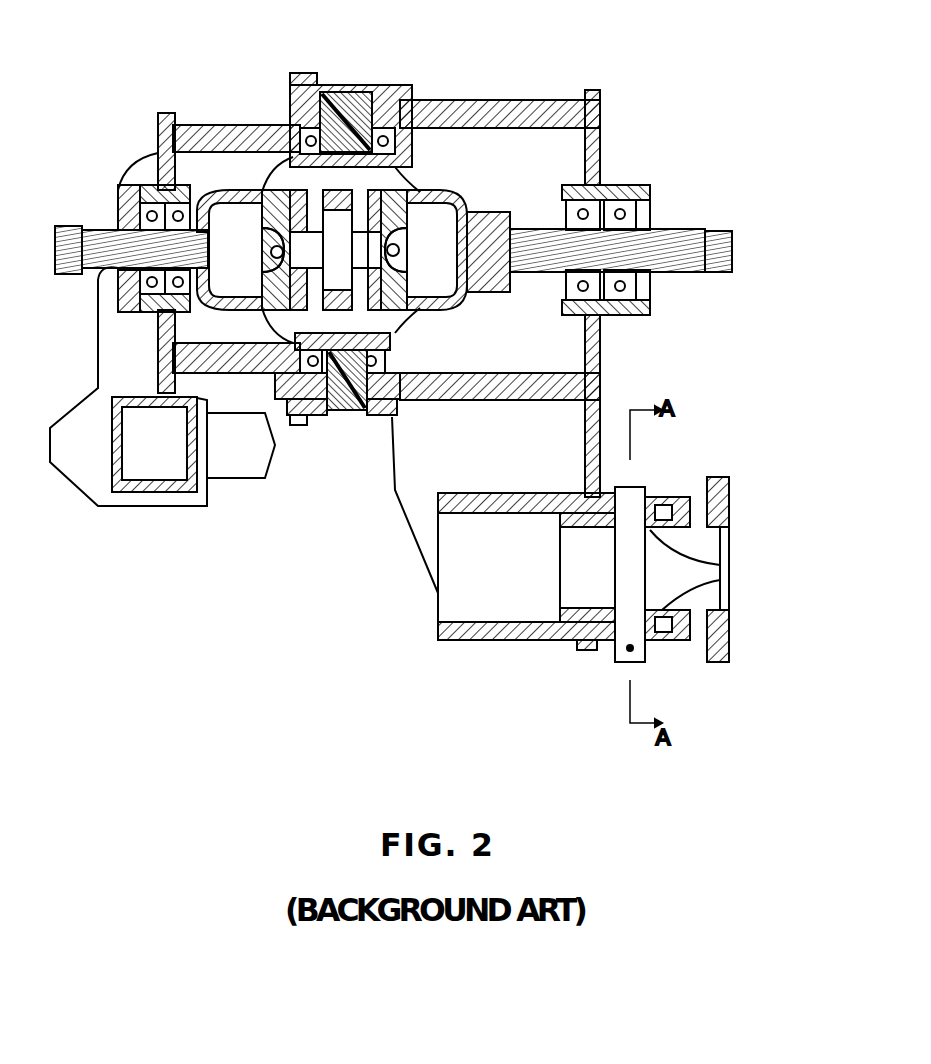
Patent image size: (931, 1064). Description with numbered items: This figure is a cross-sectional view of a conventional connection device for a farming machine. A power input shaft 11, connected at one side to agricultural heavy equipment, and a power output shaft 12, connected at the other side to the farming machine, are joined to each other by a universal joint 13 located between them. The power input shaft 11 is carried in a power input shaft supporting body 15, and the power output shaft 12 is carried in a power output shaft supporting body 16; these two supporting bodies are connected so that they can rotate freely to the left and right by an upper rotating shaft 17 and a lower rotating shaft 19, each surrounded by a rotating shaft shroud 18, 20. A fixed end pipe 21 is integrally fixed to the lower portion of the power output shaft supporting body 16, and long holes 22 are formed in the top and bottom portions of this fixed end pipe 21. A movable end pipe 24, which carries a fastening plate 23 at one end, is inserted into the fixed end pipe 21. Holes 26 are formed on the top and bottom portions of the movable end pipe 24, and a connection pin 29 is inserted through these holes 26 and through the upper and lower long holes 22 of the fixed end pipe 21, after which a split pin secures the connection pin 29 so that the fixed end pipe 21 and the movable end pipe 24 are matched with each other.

The power input shaft 11 is at (68, 230).
The power output shaft 12 is at (686, 240).
The universal joint 13 is at (420, 203).
The power input shaft supporting body 15 is at (202, 126).
The power output shaft supporting body 16 is at (603, 123).
The upper rotating shaft 17 is at (350, 85).
The rotating shaft shroud 18 is at (398, 92).
The lower rotating shaft 19 is at (340, 417).
The rotating shaft shroud 20 is at (368, 417).
The fixed end pipe 21 is at (497, 641).
The long holes 22 is at (662, 497).
The fastening plate 23 is at (730, 650).
The movable end pipe 24 is at (700, 642).
The holes 26 is at (720, 580).
The connection pin 29 is at (630, 500).